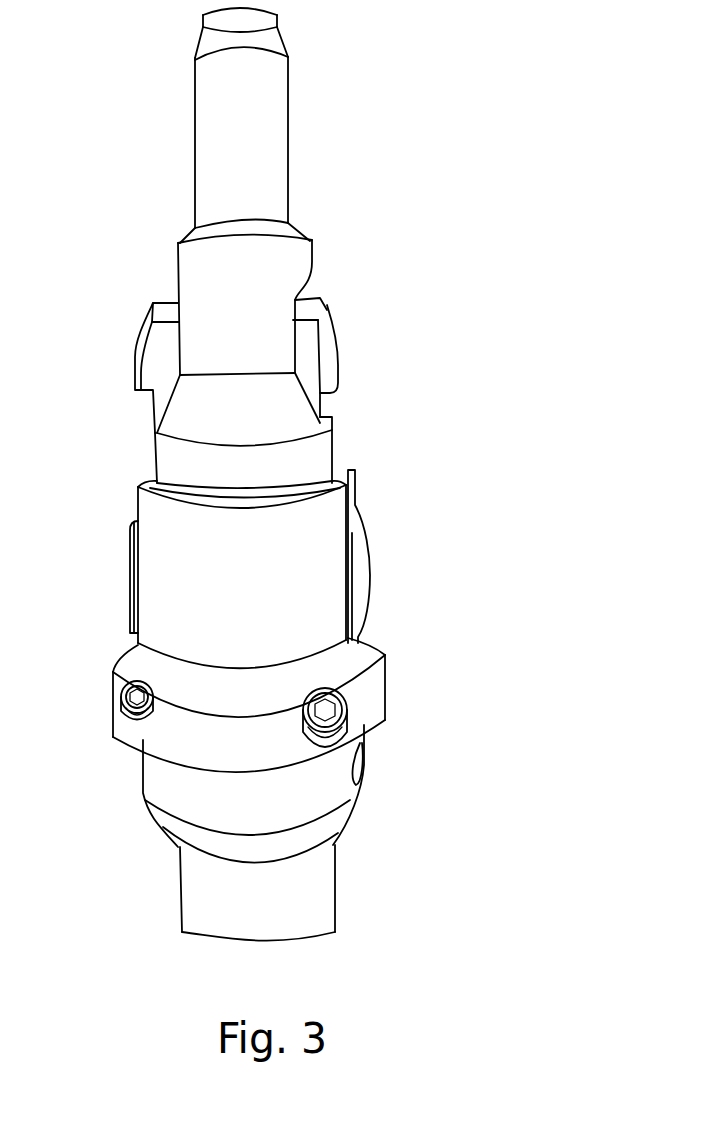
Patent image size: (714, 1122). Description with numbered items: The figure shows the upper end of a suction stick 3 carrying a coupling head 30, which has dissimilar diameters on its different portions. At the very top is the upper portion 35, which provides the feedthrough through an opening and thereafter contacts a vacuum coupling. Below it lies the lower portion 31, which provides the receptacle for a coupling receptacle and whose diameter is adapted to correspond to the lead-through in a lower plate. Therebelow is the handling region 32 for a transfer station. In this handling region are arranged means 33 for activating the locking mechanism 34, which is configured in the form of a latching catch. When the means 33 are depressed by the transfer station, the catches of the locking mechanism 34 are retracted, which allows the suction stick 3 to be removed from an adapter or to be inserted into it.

The coupling head 30 is at (517, 295).
The upper portion 35 is at (350, 8).
The locking mechanism 34 is at (128, 350).
The lower portion 31 is at (345, 361).
The handling region 32 is at (360, 478).
The means for activating the locking mechanism 33 is at (128, 577).
The suction stick 3 is at (335, 893).